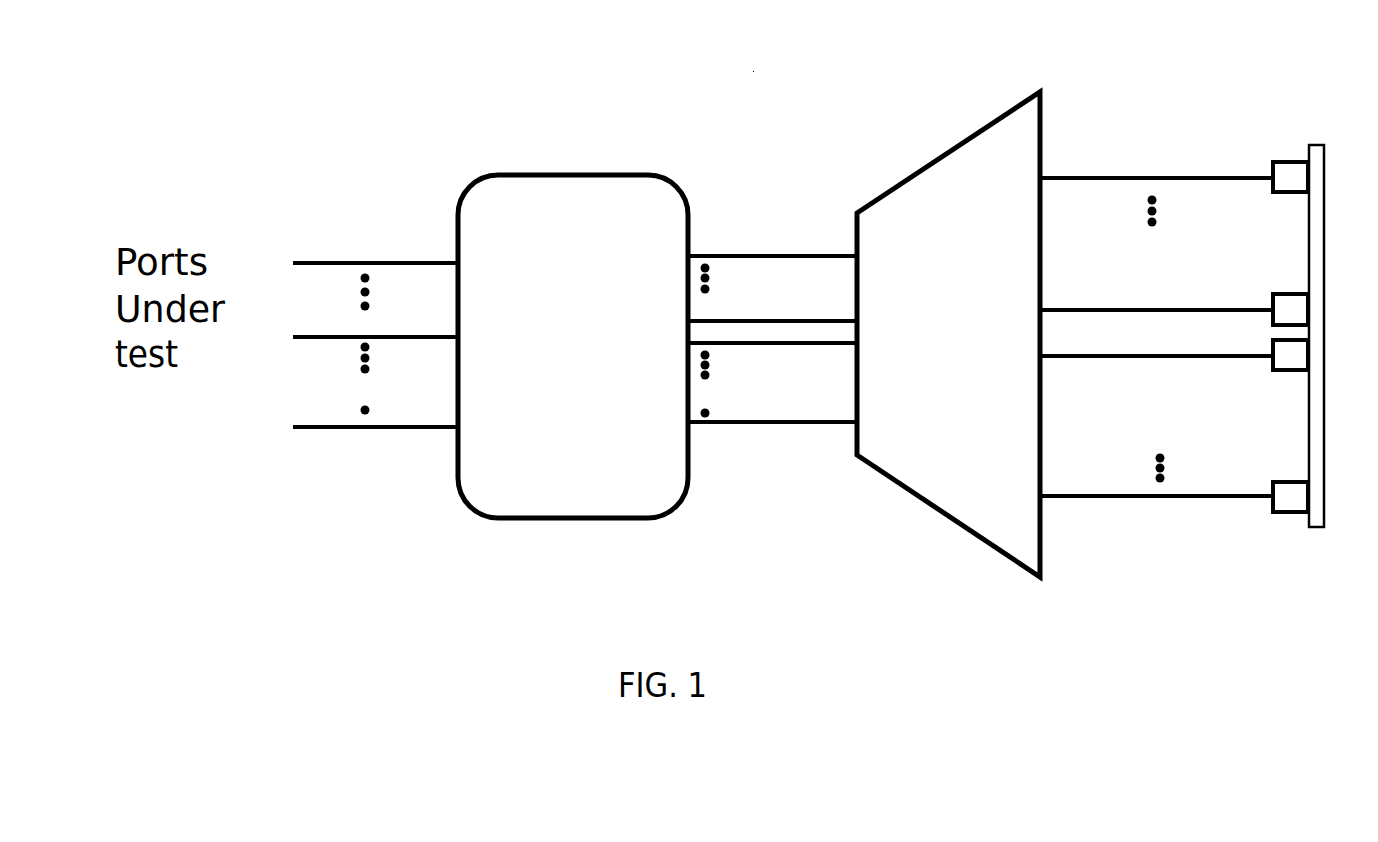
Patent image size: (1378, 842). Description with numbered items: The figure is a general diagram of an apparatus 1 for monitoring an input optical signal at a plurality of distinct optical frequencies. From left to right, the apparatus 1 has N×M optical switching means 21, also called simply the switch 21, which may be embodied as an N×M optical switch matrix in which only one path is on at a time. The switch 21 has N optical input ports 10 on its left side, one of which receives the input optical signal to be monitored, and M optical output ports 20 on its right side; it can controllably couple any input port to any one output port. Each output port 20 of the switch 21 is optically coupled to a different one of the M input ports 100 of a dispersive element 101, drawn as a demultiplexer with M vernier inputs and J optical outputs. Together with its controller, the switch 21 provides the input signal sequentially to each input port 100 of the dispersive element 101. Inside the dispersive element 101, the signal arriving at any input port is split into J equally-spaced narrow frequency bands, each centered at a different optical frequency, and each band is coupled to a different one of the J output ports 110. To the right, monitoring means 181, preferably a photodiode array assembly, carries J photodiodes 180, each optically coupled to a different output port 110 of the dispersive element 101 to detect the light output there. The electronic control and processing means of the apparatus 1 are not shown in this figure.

The apparatus 1 is at (753, 72).
The optical input ports 10 is at (353, 465).
The optical output ports 20 is at (722, 448).
The N×M optical switching means 21 is at (543, 186).
The input ports of the dispersive element 100 is at (808, 496).
The dispersive element 101 is at (963, 158).
The output ports of the dispersive element 110 is at (1045, 173).
The photodiodes 180 is at (1310, 540).
The monitoring means 181 is at (1312, 152).